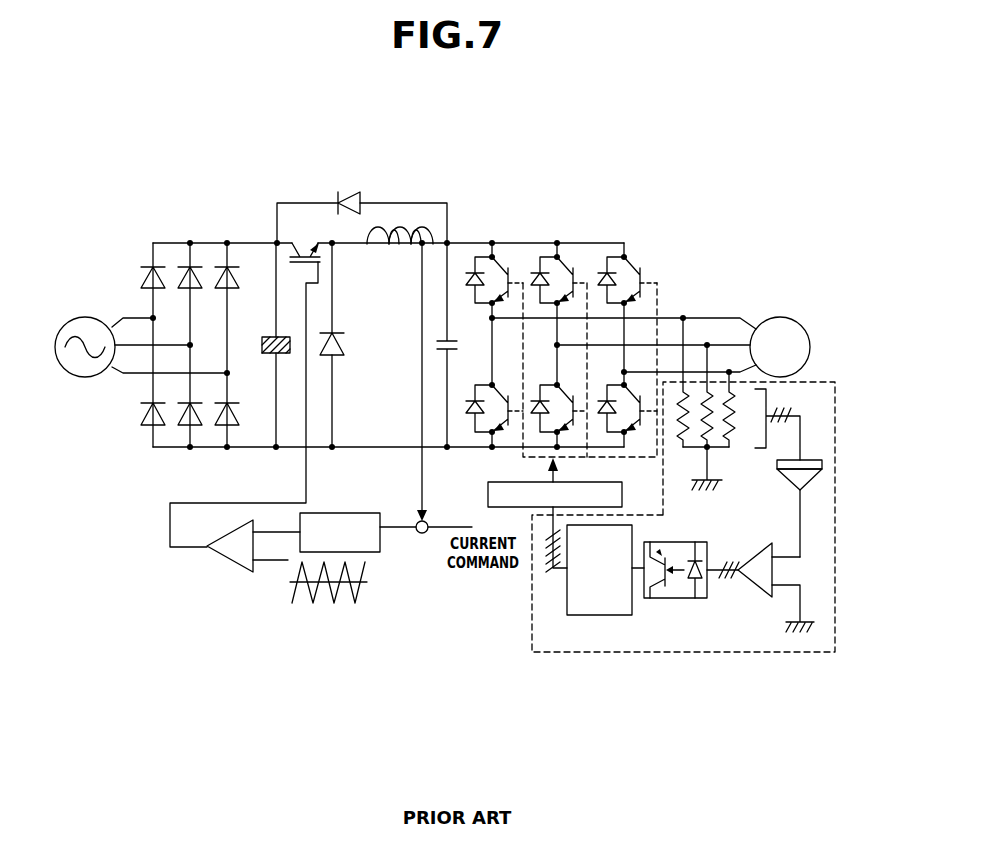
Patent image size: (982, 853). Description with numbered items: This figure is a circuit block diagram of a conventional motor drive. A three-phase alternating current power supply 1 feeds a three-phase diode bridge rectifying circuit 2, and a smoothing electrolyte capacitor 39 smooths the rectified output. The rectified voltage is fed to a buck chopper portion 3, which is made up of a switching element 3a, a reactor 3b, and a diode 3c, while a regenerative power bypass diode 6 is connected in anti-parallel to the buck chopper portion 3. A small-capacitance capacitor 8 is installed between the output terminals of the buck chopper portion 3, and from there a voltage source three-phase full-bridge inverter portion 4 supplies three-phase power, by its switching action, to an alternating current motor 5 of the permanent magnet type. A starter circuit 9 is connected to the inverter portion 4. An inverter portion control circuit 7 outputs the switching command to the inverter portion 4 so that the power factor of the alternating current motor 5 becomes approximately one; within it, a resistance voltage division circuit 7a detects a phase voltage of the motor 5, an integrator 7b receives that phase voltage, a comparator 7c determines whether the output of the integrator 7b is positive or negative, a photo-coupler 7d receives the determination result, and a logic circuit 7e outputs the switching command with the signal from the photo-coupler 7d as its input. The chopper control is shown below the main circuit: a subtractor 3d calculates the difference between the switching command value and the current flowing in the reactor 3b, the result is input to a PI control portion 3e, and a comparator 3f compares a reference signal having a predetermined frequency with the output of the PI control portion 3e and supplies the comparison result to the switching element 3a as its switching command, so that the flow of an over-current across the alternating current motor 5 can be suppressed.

The three-phase alternating current power supply 1 is at (85, 378).
The three-phase diode bridge rectifying circuit 2 is at (150, 250).
The buck chopper portion 3 is at (363, 224).
The switching element 3a is at (304, 253).
The reactor 3b is at (386, 256).
The diode 3c is at (345, 343).
The subtractor 3d is at (416, 536).
The PI control portion 3e is at (341, 512).
The comparator 3f is at (226, 562).
The voltage source three-phase full-bridge inverter portion 4 is at (590, 242).
The alternating current motor (PM motor) 5 is at (780, 316).
The regenerative power bypass diode 6 is at (351, 190).
The inverter portion control circuit 7 is at (672, 655).
The resistance voltage division circuit 7a is at (722, 460).
The integrator 7b is at (806, 498).
The comparator 7c is at (776, 571).
The photo-coupler 7d is at (692, 599).
The logic circuit 7e is at (600, 616).
The small-capacitance capacitor 8 is at (448, 339).
The starter circuit 9 is at (487, 493).
The smoothing electrolyte capacitor 39 is at (266, 335).